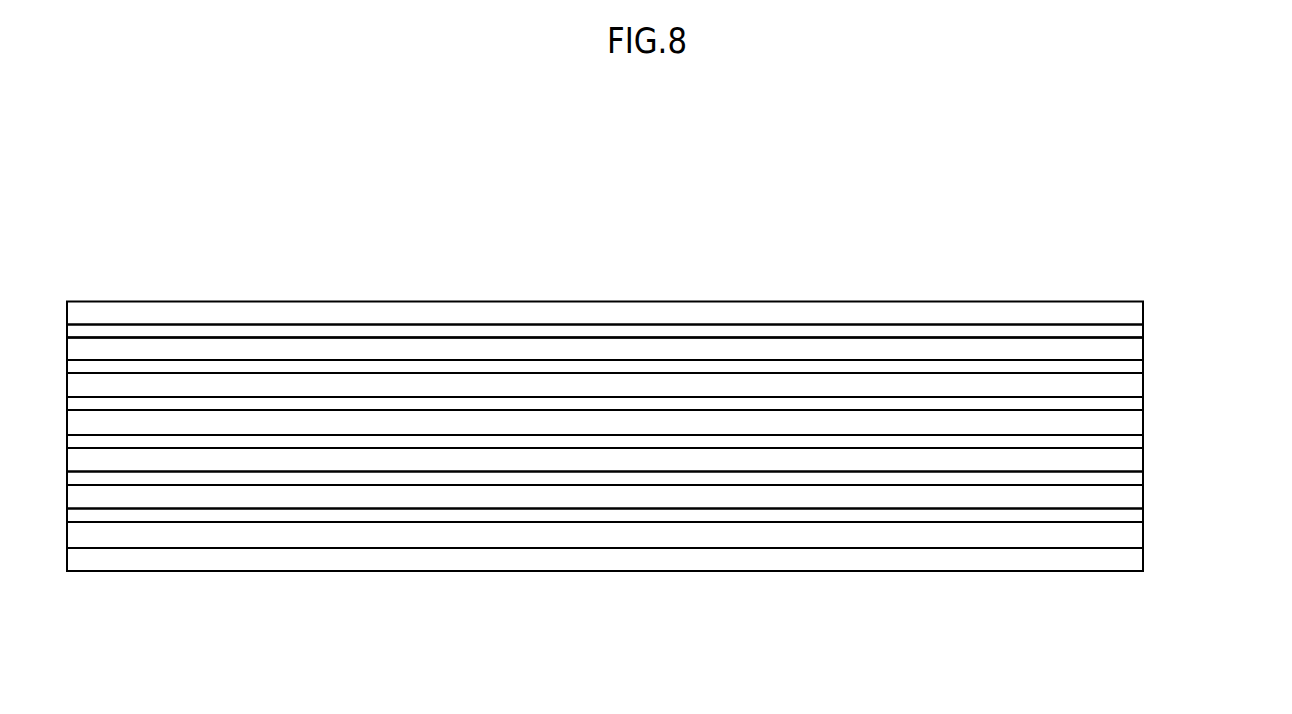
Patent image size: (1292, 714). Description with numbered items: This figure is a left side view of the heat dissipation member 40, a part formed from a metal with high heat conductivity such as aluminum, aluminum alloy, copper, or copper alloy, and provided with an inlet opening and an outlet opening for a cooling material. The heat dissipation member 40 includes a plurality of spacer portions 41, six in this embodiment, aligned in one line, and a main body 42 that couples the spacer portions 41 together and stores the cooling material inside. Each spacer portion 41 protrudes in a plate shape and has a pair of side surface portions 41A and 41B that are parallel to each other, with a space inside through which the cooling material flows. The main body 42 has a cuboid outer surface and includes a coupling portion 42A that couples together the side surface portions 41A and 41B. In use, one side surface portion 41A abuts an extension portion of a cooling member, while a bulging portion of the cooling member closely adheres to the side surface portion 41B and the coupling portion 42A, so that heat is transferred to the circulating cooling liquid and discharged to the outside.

The heat dissipation member 40 is at (803, 187).
The spacer portion 41 is at (1130, 331).
The side surface portion 41A is at (1087, 325).
The side surface portion 41B is at (1056, 338).
The main body 42 is at (738, 562).
The coupling portion 42A is at (1130, 350).